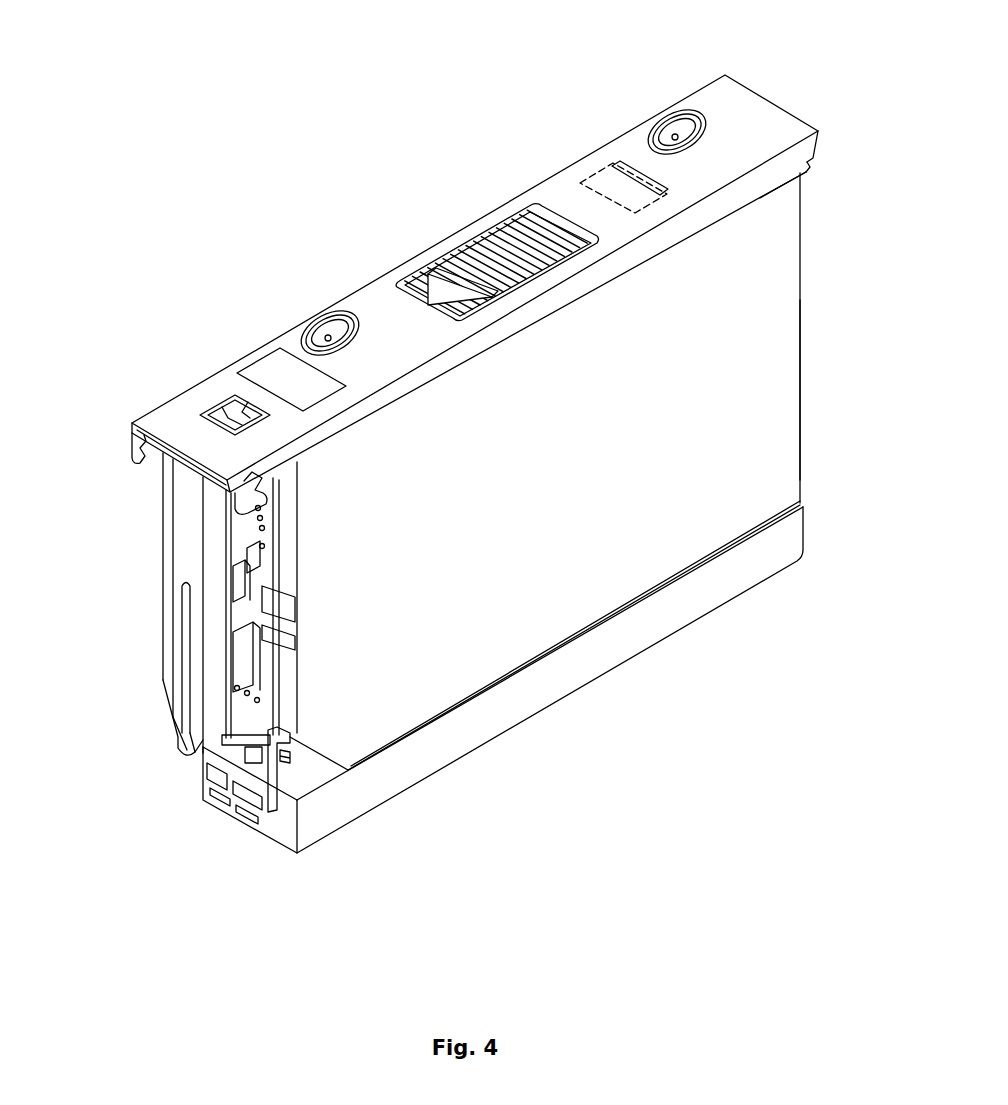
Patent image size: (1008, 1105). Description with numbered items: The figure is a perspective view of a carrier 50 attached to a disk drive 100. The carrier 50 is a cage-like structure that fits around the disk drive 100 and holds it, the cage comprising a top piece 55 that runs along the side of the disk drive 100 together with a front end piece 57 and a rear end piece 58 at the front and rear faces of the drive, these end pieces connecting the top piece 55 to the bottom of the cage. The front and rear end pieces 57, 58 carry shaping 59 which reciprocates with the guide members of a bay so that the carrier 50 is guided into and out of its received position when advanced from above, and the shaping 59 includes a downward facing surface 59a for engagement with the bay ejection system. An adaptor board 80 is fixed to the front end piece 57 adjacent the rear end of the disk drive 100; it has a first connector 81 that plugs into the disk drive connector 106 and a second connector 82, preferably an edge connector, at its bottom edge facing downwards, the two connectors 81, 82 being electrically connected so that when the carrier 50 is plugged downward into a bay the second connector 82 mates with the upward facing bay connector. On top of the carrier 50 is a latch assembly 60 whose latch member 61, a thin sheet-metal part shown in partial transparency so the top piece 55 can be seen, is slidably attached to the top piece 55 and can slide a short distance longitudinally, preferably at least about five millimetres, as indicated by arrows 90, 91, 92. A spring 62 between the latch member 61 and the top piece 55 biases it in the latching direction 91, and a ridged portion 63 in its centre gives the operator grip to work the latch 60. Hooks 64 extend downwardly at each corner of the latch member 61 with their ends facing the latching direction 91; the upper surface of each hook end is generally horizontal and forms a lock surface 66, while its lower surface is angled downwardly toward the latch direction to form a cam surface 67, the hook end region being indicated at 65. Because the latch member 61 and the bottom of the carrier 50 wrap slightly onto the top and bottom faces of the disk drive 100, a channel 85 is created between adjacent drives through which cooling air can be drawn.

The carrier 50 is at (473, 513).
The top piece 55 is at (585, 668).
The front end piece 57 is at (801, 393).
The rear end piece 58 is at (168, 702).
The shaping 59 is at (810, 460).
The downward facing surface 59a is at (182, 586).
The latch assembly 60 is at (764, 88).
The latch member 61 is at (760, 131).
The spring 62 is at (620, 168).
The ridged portion 63 is at (327, 336).
The hook 64 is at (724, 77).
The notch 65 is at (810, 167).
The lock surface 66 is at (811, 160).
The cam surface 67 is at (808, 176).
The adaptor board 80 is at (241, 702).
The first connector 81 is at (283, 553).
The second connector 82 is at (245, 790).
The channel 85 is at (705, 283).
The direction arrow 90 is at (433, 208).
The latching direction 91 is at (538, 157).
The direction arrow 92 is at (447, 188).
The disk drive 100 is at (560, 446).
The disk drive connector 106 is at (252, 608).